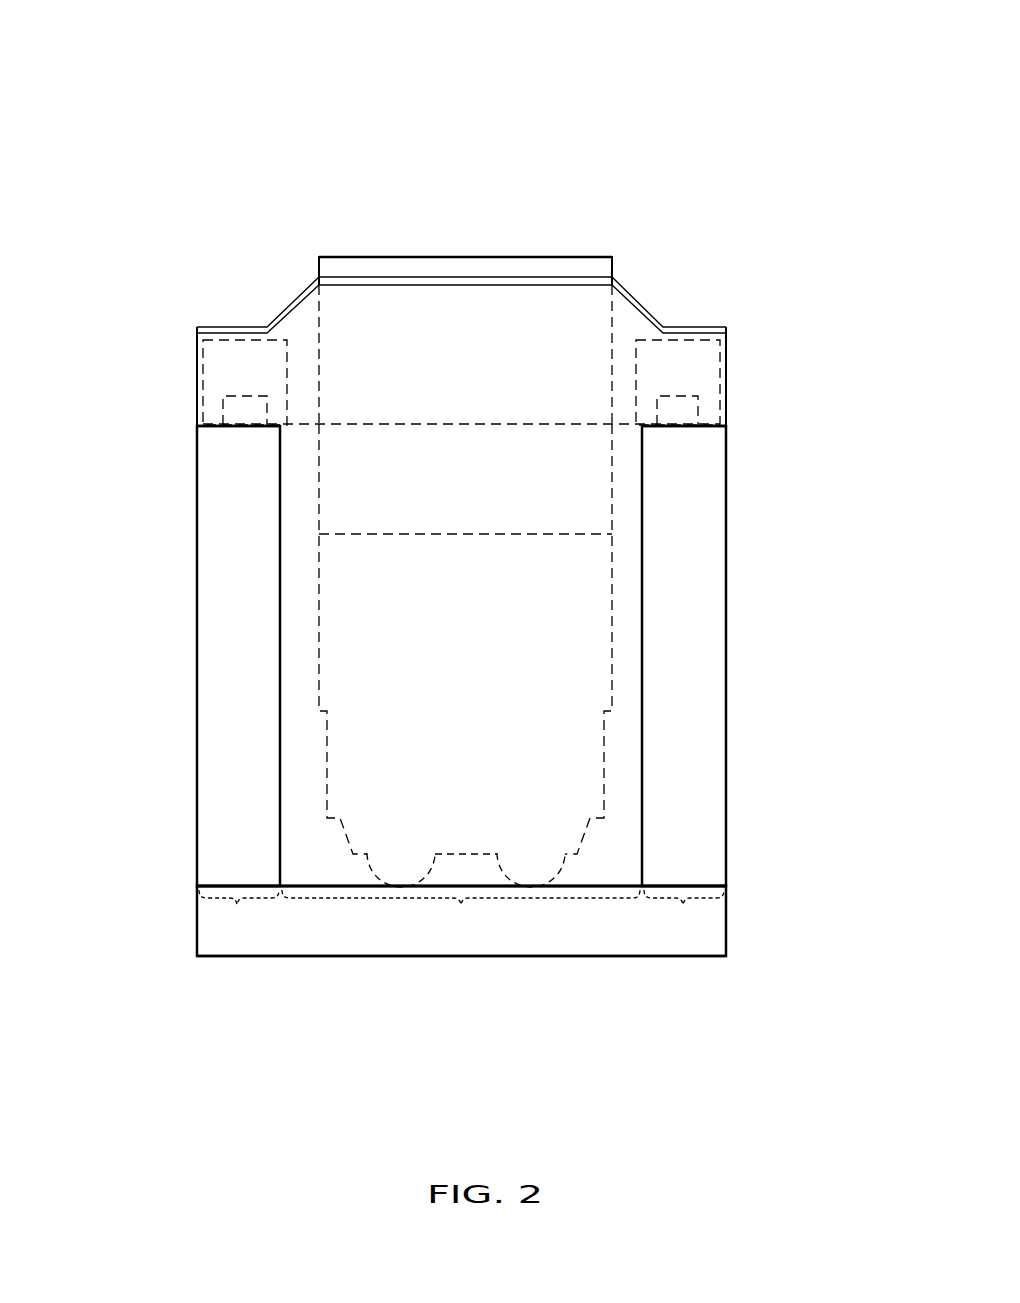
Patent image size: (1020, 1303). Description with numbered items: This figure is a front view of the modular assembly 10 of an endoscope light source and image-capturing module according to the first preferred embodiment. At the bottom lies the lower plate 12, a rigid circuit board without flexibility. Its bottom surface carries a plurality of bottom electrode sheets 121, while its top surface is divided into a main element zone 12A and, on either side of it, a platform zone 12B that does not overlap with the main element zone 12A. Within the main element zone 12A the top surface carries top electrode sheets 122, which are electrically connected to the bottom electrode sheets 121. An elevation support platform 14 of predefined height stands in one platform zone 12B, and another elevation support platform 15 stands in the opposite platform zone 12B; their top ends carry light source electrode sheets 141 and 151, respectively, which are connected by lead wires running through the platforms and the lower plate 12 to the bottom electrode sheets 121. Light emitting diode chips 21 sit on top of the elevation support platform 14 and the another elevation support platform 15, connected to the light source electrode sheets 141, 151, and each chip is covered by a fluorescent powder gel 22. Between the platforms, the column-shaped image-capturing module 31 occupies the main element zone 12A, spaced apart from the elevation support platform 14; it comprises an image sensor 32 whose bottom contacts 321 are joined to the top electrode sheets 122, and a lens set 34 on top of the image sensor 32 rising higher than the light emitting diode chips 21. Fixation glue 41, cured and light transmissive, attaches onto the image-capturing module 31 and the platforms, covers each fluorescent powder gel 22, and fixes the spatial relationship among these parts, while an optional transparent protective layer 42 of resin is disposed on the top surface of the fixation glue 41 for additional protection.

The modular assembly 10 is at (600, 86).
The lower plate 12 is at (197, 930).
The main element zone 12A is at (461, 905).
The platform zone 12B is at (237, 905).
The bottom electrode sheets 121 is at (350, 957).
The top electrode sheets 122 is at (568, 886).
The elevation support platform 14 is at (197, 725).
The light source electrode sheets 141 is at (234, 428).
The another elevation support platform 15 is at (726, 725).
The light source electrode sheets 151 is at (690, 428).
The light emitting diode chips 21 is at (225, 403).
The fluorescent powder gel 22 is at (205, 371).
The image-capturing module 31 is at (512, 248).
The image sensor 32 is at (543, 758).
The contacts 321 is at (567, 862).
The lens set 34 is at (452, 310).
The fixation glue 41 is at (620, 325).
The transparent protective layer 42 is at (655, 315).